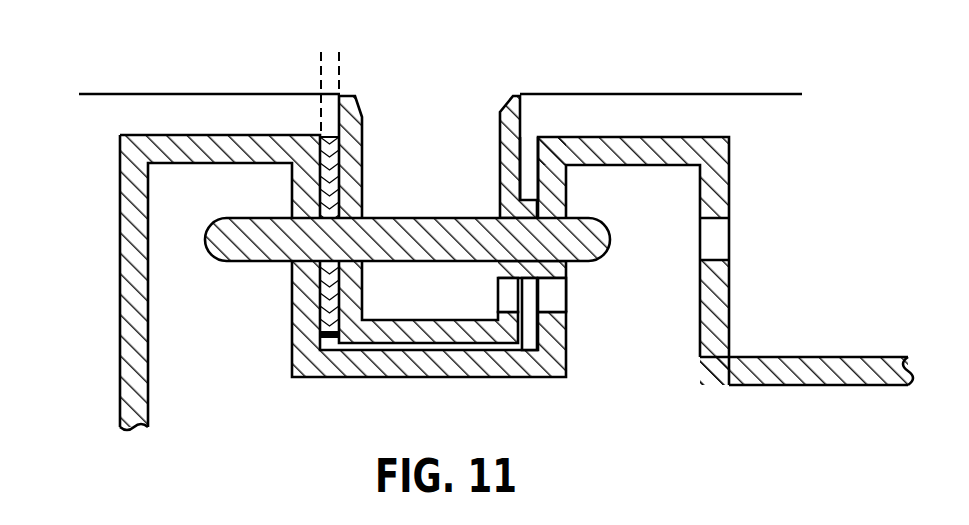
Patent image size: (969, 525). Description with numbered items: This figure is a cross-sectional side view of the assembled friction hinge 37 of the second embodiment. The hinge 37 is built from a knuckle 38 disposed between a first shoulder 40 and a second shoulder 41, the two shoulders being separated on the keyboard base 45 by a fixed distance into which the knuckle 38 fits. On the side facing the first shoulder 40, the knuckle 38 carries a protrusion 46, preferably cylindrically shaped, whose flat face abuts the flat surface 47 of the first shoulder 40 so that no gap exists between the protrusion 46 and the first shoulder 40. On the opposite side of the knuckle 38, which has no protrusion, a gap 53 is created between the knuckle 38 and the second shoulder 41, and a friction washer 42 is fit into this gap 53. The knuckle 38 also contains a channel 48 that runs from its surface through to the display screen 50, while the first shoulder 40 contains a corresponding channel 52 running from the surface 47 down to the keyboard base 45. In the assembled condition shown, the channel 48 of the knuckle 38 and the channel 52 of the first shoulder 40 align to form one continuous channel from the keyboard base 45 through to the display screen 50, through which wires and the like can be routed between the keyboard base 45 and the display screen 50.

The hinge 37 is at (79, 205).
The knuckle 38 is at (515, 105).
The first shoulder 40 is at (674, 334).
The second shoulder 41 is at (181, 339).
The friction washer 42 is at (330, 337).
The keyboard base 45 is at (790, 385).
The protrusion 46 is at (527, 352).
The surface 47 is at (528, 148).
The channel 48 is at (497, 299).
The display screen 50 is at (780, 94).
The channel 52 is at (570, 295).
The gap 53 is at (329, 53).